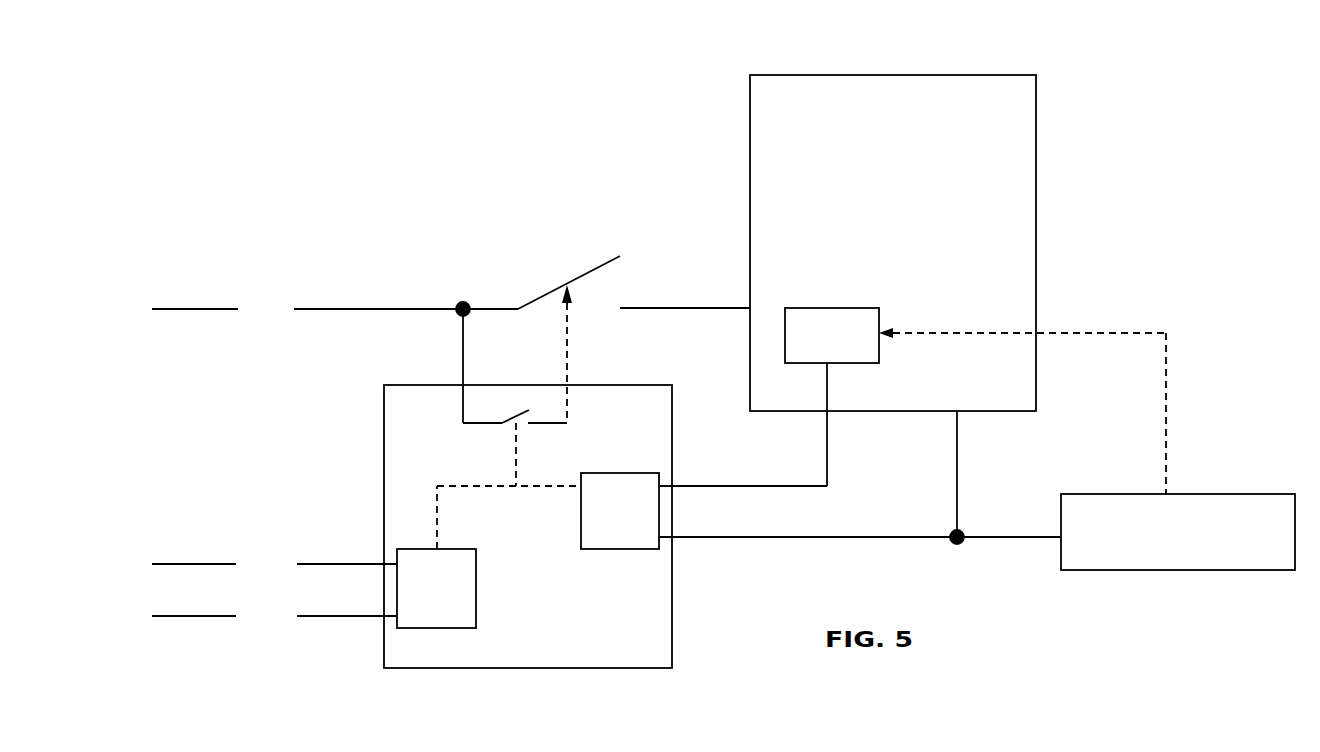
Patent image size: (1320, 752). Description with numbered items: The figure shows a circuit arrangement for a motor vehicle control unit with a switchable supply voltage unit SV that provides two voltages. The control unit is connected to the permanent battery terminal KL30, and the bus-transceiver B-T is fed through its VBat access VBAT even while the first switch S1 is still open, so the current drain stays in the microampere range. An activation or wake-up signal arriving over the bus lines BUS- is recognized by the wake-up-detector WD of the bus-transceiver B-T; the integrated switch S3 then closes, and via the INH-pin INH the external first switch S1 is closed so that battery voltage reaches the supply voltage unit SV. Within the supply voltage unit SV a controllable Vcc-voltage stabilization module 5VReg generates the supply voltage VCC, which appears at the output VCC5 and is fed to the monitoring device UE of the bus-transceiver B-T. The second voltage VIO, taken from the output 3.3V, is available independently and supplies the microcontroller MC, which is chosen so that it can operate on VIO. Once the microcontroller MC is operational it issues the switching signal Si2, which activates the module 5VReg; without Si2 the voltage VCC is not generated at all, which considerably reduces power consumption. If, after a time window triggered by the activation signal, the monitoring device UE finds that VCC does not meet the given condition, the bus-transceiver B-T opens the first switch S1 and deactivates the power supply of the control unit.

The battery terminal KL30 is at (335, 310).
The first switch S1 is at (634, 281).
The INH-pin of bus-transceiver INH is at (550, 354).
The VBat-access of the bus-transceiver VBAT is at (435, 366).
The integrated switch S3 is at (515, 438).
The bus-transceiver B-T is at (528, 526).
The wake-up-detector WD is at (489, 557).
The monitoring device UE is at (620, 511).
The bus line BUS- is at (274, 615).
The supply voltage unit SV is at (893, 243).
The Vcc-voltage stabilization module 5VReg is at (832, 335).
The VCC supply output VCC5 is at (800, 424).
The supply voltage for the monitoring device VCC is at (743, 473).
The second voltage output 3.3V is at (967, 466).
The voltage for the input-output-modules VIO is at (860, 525).
The microcontroller MC is at (1178, 532).
The switching signal Si2 is at (1039, 398).